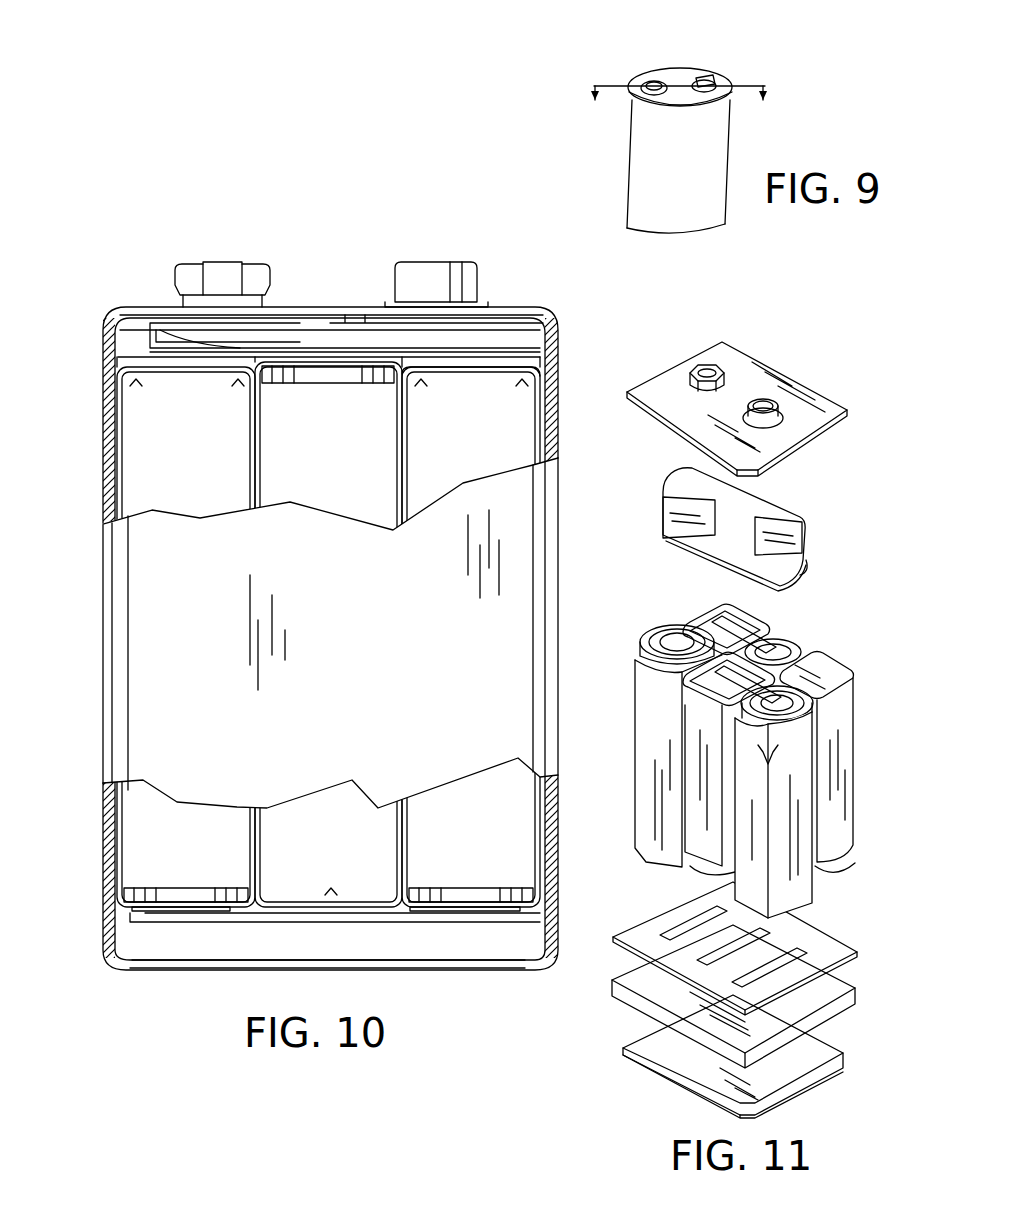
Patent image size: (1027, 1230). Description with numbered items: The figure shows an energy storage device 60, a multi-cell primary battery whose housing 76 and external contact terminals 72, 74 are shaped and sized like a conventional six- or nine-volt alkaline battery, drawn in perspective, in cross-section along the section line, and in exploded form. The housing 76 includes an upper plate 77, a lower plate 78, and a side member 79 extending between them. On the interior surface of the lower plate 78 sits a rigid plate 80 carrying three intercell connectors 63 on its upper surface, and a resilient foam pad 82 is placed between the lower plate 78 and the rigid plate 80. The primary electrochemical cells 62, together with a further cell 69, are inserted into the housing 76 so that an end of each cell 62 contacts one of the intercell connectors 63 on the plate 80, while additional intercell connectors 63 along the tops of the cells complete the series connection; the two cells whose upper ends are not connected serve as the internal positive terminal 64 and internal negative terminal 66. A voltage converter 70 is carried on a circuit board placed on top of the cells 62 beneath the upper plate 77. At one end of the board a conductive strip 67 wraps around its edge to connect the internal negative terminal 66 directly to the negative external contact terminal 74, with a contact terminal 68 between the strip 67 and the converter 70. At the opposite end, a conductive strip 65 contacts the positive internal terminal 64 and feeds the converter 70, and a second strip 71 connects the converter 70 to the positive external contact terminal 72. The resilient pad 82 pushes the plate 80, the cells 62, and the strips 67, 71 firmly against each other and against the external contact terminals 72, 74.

In FIG. 9, the energy storage device 60 is at (750, 30).
In FIG. 10, the energy storage device 60 is at (104, 266).
In FIG. 10, the primary electrochemical cells 62 is at (130, 422).
In FIG. 11, the primary electrochemical cells 62 is at (642, 720).
In FIG. 10, the intercell connectors 63 is at (168, 916).
In FIG. 11, the intercell connectors 63 is at (765, 647).
In FIG. 10, the internal positive terminal 64 is at (478, 357).
In FIG. 10, the conductive strip 65 is at (548, 364).
In FIG. 11, the conductive strip 65 is at (808, 570).
In FIG. 10, the internal negative terminal 66 is at (125, 354).
In FIG. 11, the internal negative terminal 66 is at (652, 635).
In FIG. 10, the conductive strip 67 is at (168, 330).
In FIG. 11, the conductive strip 67 is at (664, 532).
In FIG. 10, the conductive contact 68 is at (128, 320).
In FIG. 11, the battery cell 69 is at (842, 662).
In FIG. 10, the voltage converter 70 is at (540, 337).
In FIG. 11, the voltage converter 70 is at (757, 502).
In FIG. 10, the conductor 71 is at (512, 320).
In FIG. 11, the conductor 71 is at (805, 526).
In FIG. 9, the positive external contact terminal 72 is at (712, 80).
In FIG. 10, the positive external contact terminal 72 is at (428, 272).
In FIG. 11, the positive external contact terminal 72 is at (772, 418).
In FIG. 9, the negative external contact terminal 74 is at (652, 80).
In FIG. 10, the negative external contact terminal 74 is at (230, 270).
In FIG. 11, the negative external contact terminal 74 is at (702, 366).
In FIG. 9, the housing 76 is at (628, 125).
In FIG. 10, the housing 76 is at (101, 526).
In FIG. 10, the upper plate 77 is at (297, 312).
In FIG. 11, the upper plate 77 is at (735, 354).
In FIG. 10, the lower plate 78 is at (438, 962).
In FIG. 11, the lower plate 78 is at (635, 1050).
In FIG. 10, the side member 79 is at (515, 620).
In FIG. 10, the rigid plate 80 is at (225, 922).
In FIG. 11, the rigid plate 80 is at (625, 940).
In FIG. 10, the resilient foam pad 82 is at (505, 948).
In FIG. 11, the resilient foam pad 82 is at (632, 986).